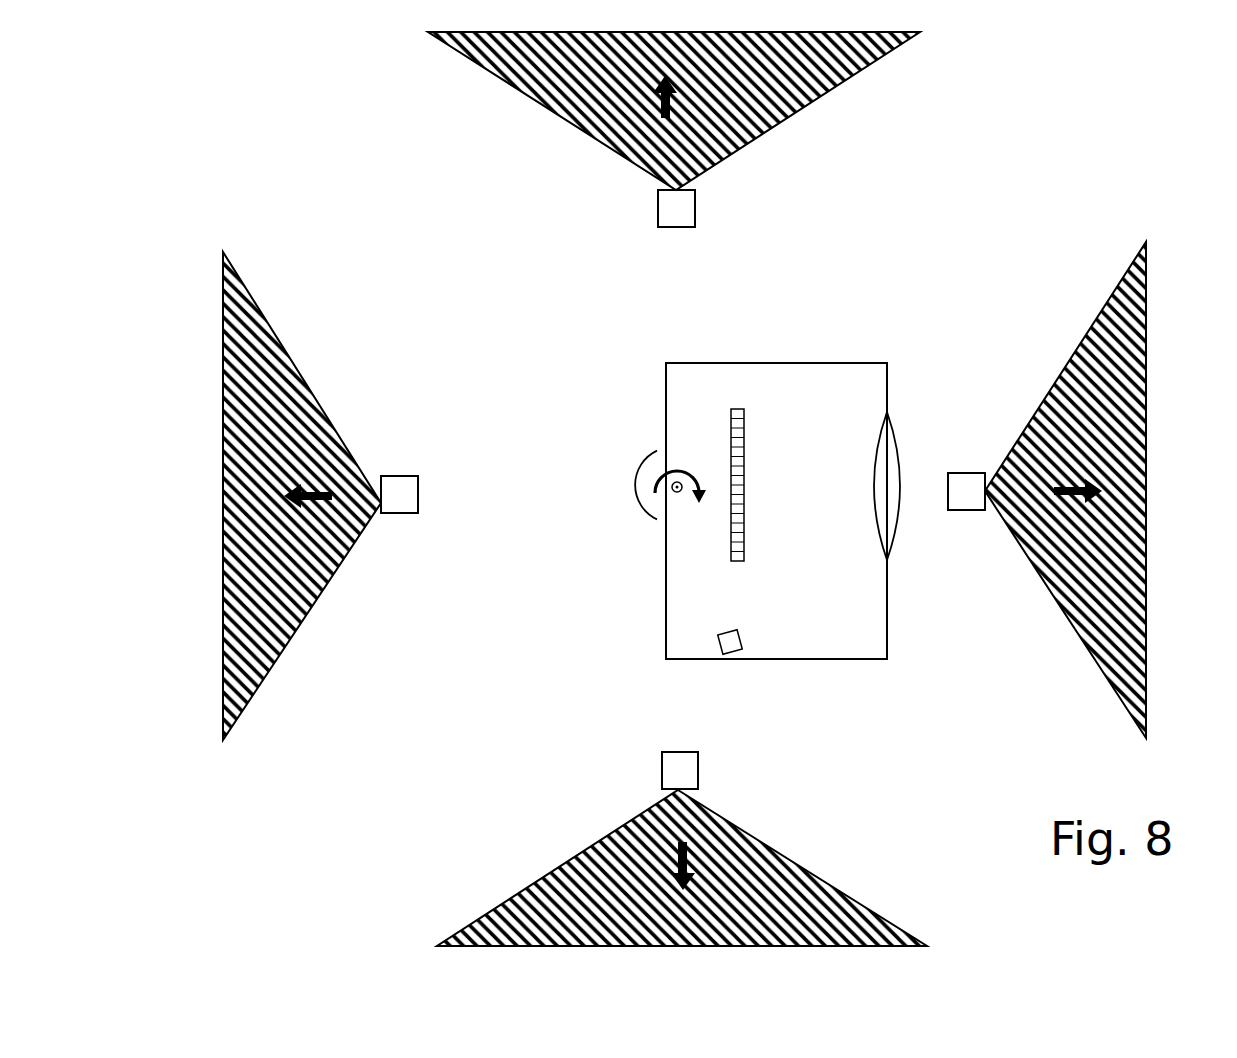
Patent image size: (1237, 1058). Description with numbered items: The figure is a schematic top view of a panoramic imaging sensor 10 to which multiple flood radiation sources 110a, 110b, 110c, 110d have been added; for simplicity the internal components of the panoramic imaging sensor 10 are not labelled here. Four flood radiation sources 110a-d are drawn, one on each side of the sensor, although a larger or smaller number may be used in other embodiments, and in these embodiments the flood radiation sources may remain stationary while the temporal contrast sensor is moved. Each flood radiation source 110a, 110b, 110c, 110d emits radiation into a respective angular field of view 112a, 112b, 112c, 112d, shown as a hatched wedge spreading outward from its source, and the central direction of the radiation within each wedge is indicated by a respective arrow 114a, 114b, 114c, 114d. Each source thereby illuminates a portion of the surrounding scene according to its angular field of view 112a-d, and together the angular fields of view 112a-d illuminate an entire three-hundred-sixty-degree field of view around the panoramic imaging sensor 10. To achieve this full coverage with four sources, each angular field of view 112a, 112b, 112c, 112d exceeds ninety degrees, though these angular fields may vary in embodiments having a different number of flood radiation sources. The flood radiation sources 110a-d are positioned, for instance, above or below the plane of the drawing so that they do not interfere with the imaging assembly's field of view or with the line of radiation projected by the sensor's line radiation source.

The panoramic imaging sensor 10 is at (638, 367).
The flood radiation source 110a is at (971, 489).
The flood radiation source 110b is at (687, 202).
The flood radiation source 110c is at (403, 500).
The flood radiation source 110d is at (678, 772).
The angular field of view 112a is at (1058, 400).
The angular field of view 112b is at (703, 137).
The angular field of view 112c is at (291, 412).
The angular field of view 112d is at (720, 838).
The arrow 114a is at (1093, 478).
The arrow 114b is at (695, 105).
The arrow 114c is at (250, 392).
The arrow 114d is at (688, 867).